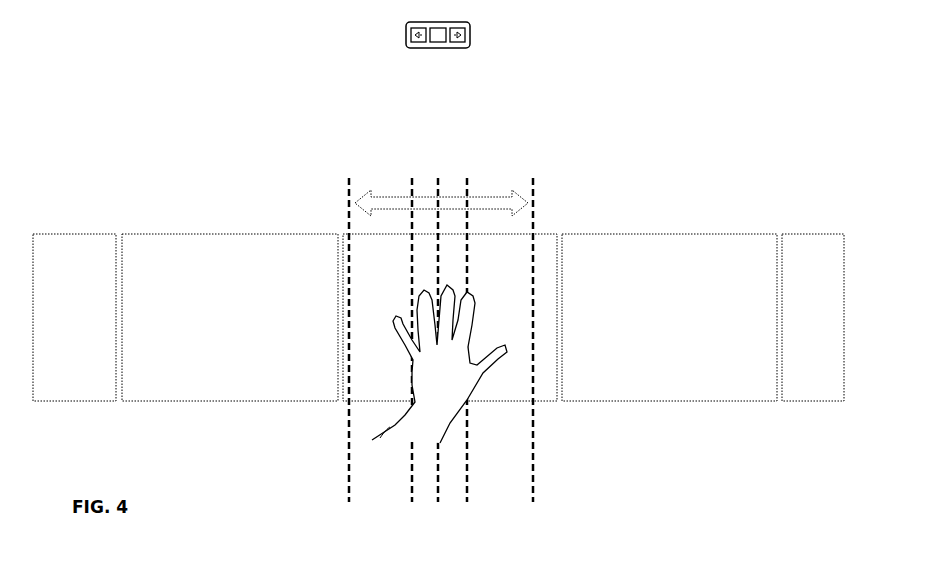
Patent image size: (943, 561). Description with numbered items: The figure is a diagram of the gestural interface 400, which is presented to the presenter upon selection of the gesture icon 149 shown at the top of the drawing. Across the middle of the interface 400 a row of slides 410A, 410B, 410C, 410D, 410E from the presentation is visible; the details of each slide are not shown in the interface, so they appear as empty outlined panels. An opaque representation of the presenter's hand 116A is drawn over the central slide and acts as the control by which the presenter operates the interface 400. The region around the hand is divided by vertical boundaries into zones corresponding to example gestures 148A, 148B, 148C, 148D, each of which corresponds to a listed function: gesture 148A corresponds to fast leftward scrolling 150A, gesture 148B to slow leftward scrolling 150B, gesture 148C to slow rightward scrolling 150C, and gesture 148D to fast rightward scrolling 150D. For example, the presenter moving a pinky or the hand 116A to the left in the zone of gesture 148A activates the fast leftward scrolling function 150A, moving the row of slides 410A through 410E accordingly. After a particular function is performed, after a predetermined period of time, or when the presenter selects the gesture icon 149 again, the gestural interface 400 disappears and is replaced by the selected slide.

The gestural interface 400 is at (493, 31).
The gesture icon 149 is at (437, 49).
The fast leftward scrolling function 150A is at (345, 177).
The slow leftward scrolling function 150B is at (410, 176).
The slow rightward scrolling function 150C is at (469, 176).
The fast rightward scrolling function 150D is at (536, 176).
The slide 410A is at (81, 403).
The slide 410B is at (238, 403).
The slide 410C is at (540, 404).
The slide 410D is at (669, 403).
The slide 410E is at (812, 403).
The opaque representation of the presenter's hand 116A is at (434, 374).
The gesture 148A is at (382, 494).
The gesture 148B is at (427, 340).
The gesture 148C is at (455, 494).
The gesture 148D is at (504, 494).